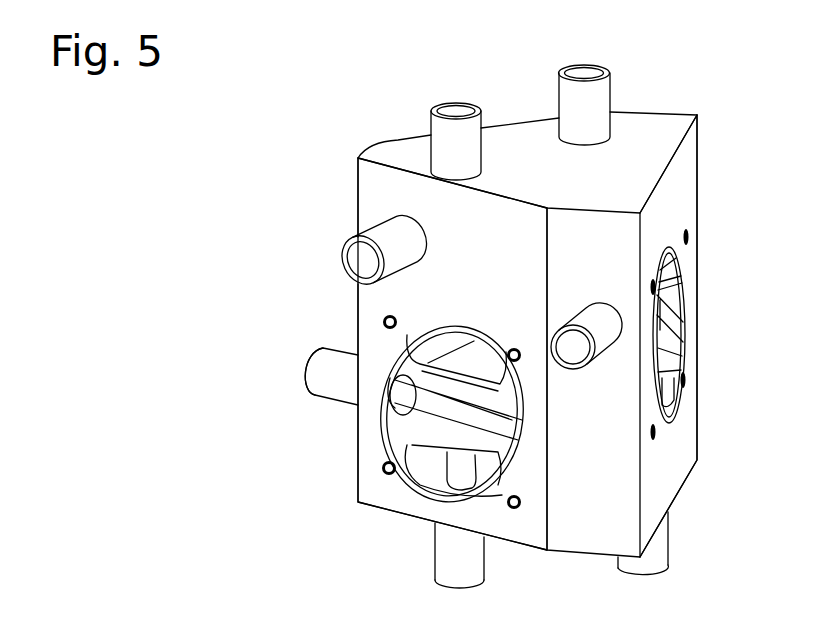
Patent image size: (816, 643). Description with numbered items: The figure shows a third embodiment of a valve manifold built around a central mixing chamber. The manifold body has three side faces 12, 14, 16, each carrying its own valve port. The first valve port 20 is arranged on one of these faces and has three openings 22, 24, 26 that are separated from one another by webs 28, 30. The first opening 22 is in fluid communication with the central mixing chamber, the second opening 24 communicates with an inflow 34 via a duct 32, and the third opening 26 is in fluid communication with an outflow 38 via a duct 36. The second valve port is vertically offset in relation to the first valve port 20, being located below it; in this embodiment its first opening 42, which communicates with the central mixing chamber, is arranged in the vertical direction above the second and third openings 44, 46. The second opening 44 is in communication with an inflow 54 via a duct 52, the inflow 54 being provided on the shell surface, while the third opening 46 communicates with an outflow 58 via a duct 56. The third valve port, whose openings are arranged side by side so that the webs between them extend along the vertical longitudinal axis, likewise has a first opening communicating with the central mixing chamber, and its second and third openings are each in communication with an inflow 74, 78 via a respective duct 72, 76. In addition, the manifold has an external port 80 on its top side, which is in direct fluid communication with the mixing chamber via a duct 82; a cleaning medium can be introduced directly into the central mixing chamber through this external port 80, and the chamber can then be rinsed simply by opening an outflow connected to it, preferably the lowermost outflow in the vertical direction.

The side face 12 is at (680, 175).
The side face 14 is at (372, 188).
The side face 16 is at (522, 118).
The first valve port 20 is at (673, 407).
The first opening 22 is at (668, 317).
The second opening 24 is at (668, 265).
The third opening 26 is at (667, 387).
The web 28 is at (672, 288).
The web 30 is at (667, 353).
The duct 32 is at (598, 332).
The inflow 34 is at (572, 352).
The duct 36 is at (652, 545).
The outflow 38 is at (643, 573).
The first opening 42 is at (428, 348).
The second opening 44 is at (435, 402).
The third opening 46 is at (433, 465).
The duct 52 is at (325, 385).
The inflow 54 is at (308, 373).
The duct 56 is at (448, 542).
The outflow 58 is at (450, 590).
The duct 72 is at (595, 98).
The inflow 74 is at (590, 73).
The duct 76 is at (382, 237).
The inflow 78 is at (345, 260).
The external port 80 is at (455, 108).
The duct 82 is at (443, 133).